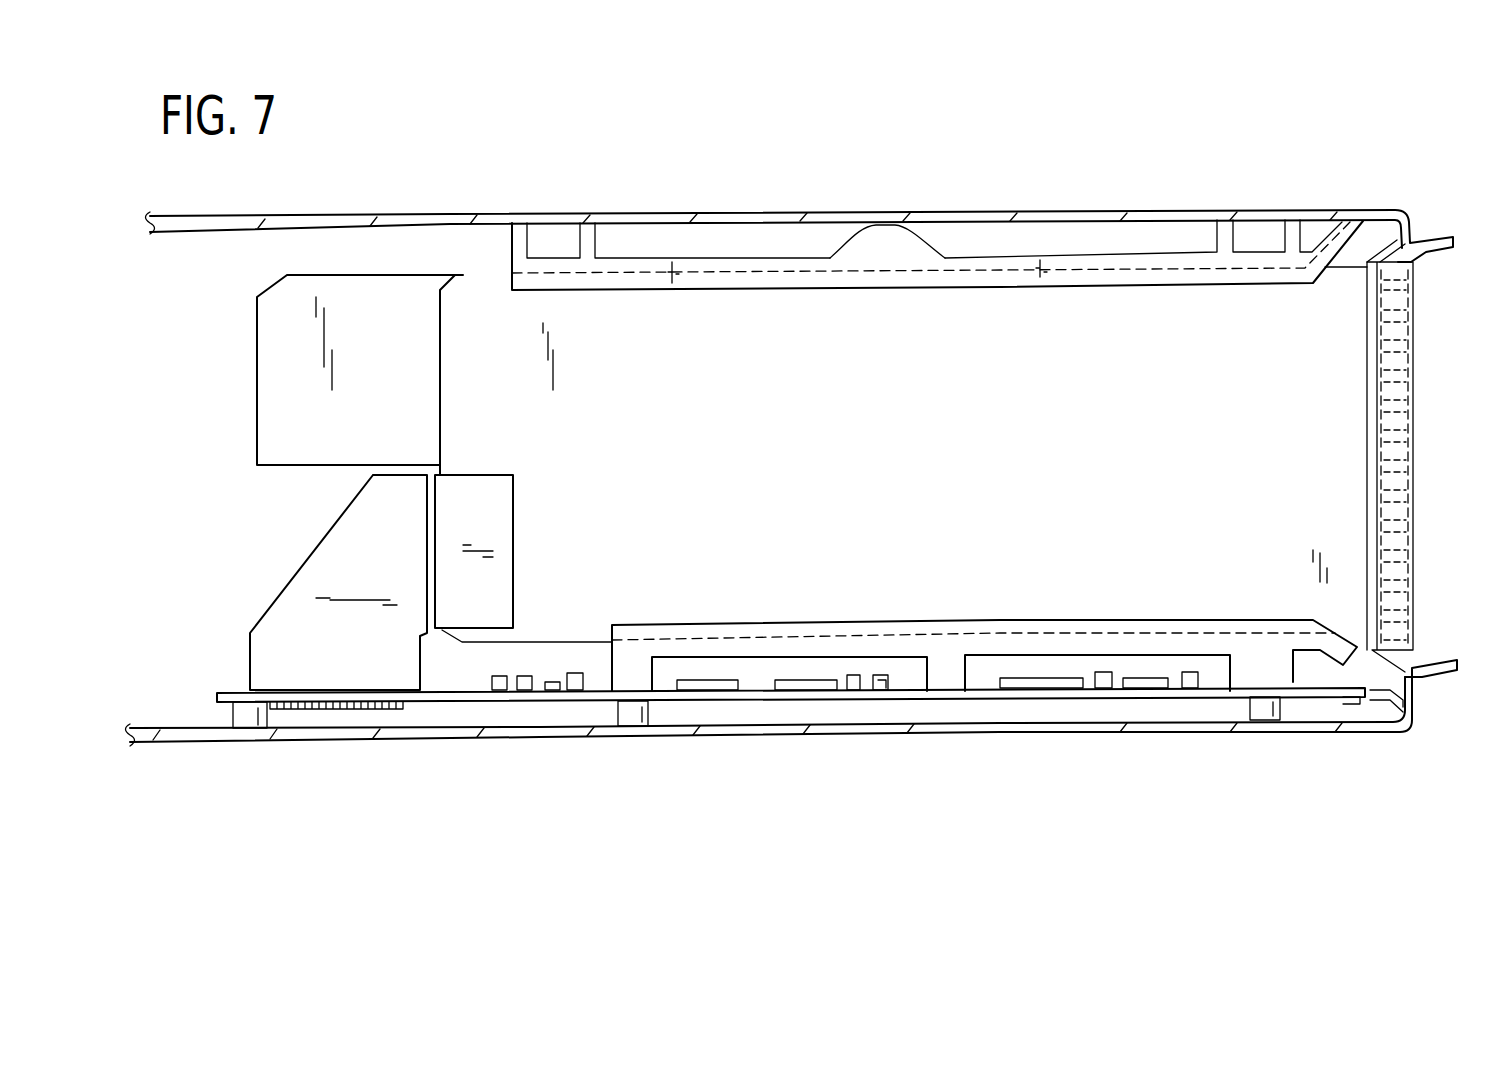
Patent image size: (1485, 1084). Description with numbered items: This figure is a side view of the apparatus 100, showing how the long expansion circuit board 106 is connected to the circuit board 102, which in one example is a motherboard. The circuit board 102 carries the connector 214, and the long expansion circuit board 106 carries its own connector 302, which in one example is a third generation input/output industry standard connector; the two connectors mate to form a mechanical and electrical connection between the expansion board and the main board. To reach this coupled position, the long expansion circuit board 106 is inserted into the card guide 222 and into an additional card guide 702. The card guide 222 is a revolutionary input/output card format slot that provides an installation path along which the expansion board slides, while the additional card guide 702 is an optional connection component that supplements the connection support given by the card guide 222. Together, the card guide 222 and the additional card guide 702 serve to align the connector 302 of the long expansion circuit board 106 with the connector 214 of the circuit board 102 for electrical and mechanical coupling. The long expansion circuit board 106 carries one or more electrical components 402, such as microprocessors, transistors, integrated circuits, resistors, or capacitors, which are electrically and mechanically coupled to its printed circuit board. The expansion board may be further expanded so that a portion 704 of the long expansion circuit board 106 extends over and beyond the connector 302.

The apparatus 100 is at (556, 163).
The circuit board 102 is at (440, 695).
The long expansion circuit board 106 is at (1141, 306).
The connector 214 is at (297, 661).
The card guide 222 is at (947, 670).
The connector 302 is at (485, 595).
The electrical components 402 is at (720, 692).
The additional card guide 702 is at (884, 247).
The portion 704 is at (288, 368).